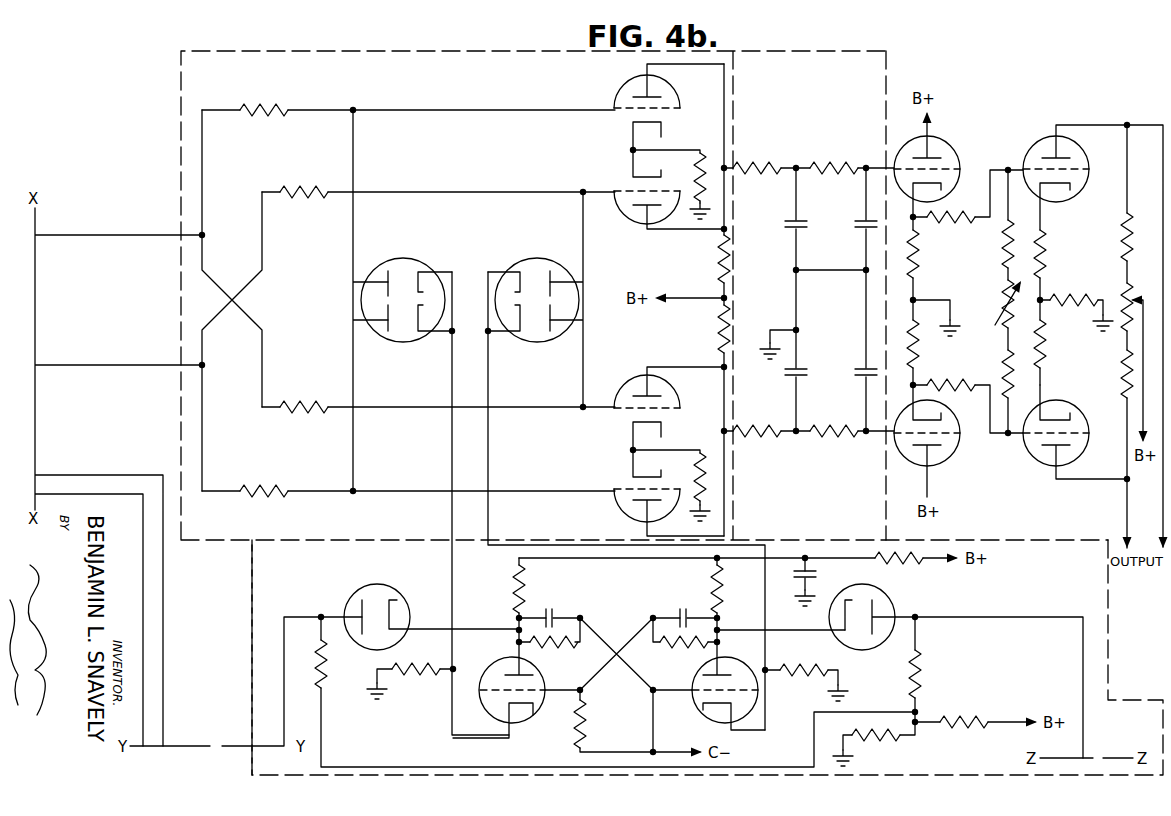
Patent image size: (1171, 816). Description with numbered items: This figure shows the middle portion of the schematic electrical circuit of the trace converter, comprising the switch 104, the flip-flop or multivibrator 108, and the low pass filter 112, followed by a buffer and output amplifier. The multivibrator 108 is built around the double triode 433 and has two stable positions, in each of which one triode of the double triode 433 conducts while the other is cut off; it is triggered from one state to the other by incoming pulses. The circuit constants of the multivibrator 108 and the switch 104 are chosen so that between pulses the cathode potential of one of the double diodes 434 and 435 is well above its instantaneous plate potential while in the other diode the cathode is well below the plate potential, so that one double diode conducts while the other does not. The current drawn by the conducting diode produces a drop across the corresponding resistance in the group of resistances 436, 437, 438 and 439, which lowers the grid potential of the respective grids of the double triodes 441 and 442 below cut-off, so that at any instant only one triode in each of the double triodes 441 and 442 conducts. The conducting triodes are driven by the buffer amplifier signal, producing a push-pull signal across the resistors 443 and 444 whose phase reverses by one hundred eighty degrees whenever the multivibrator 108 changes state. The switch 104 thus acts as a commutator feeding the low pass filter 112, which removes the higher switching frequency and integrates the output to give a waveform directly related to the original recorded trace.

The switch 104 is at (479, 90).
The multivibrator 108 is at (317, 570).
The low pass filter 112 is at (821, 123).
The double triode 433 is at (486, 706).
The double diode 434 is at (415, 259).
The double diode 435 is at (530, 259).
The resistance 436 is at (260, 107).
The resistance 437 is at (284, 189).
The resistance 438 is at (286, 404).
The resistance 439 is at (250, 485).
The double triode 441 is at (632, 221).
The double triode 442 is at (630, 375).
The resistor 443 is at (718, 265).
The resistor 444 is at (720, 327).